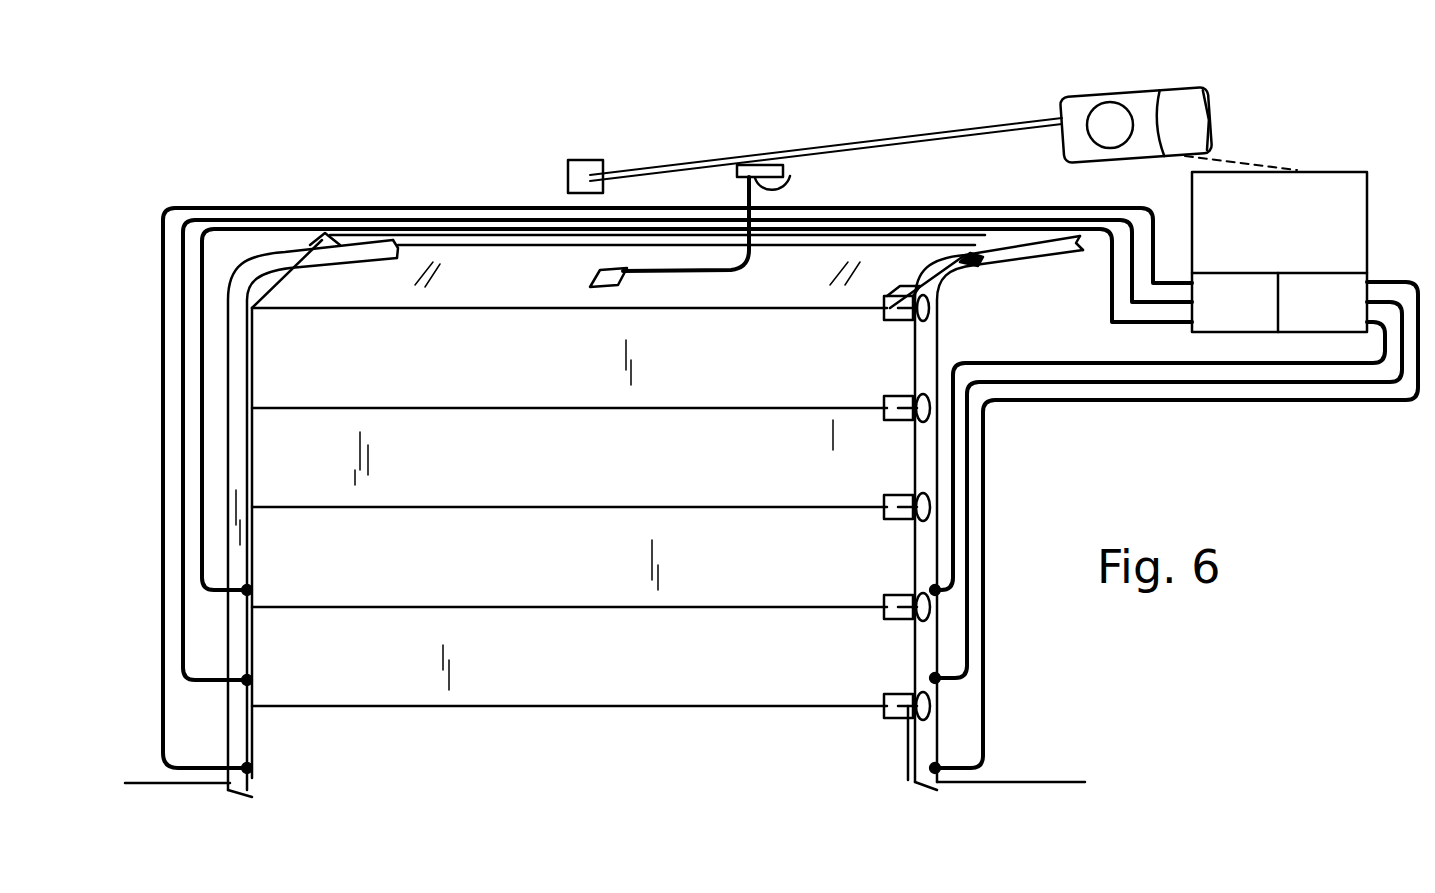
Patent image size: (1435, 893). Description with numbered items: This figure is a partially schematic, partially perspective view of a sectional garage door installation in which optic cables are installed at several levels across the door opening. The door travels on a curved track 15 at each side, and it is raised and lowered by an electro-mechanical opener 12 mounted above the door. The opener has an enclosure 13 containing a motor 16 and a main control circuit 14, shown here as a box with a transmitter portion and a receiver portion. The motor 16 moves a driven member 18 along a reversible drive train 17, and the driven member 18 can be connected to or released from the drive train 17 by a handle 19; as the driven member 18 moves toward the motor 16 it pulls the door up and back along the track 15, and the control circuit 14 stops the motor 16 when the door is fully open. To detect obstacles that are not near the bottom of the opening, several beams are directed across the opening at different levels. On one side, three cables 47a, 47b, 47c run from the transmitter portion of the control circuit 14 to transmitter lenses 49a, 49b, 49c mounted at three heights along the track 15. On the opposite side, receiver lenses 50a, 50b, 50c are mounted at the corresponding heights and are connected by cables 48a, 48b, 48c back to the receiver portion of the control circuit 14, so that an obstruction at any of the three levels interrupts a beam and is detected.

The electro-mechanical opener 12 is at (1210, 92).
The enclosure 13 is at (1197, 120).
The main control circuit 14 is at (1325, 172).
The curved track 15 is at (330, 262).
The motor 16 is at (1103, 112).
The reversible drive train 17 is at (840, 148).
The driven member 18 is at (760, 165).
The handle 19 is at (790, 177).
The cable 47a is at (163, 443).
The cable 47b is at (182, 388).
The cable 47c is at (200, 345).
The cable 48a is at (983, 630).
The cable 48b is at (967, 545).
The cable 48c is at (953, 455).
The transmitter lens 49a is at (247, 768).
The transmitter lens 49b is at (247, 680).
The transmitter lens 49c is at (247, 590).
The receiver lens 50a is at (935, 768).
The receiver lens 50b is at (935, 678).
The receiver lens 50c is at (935, 590).